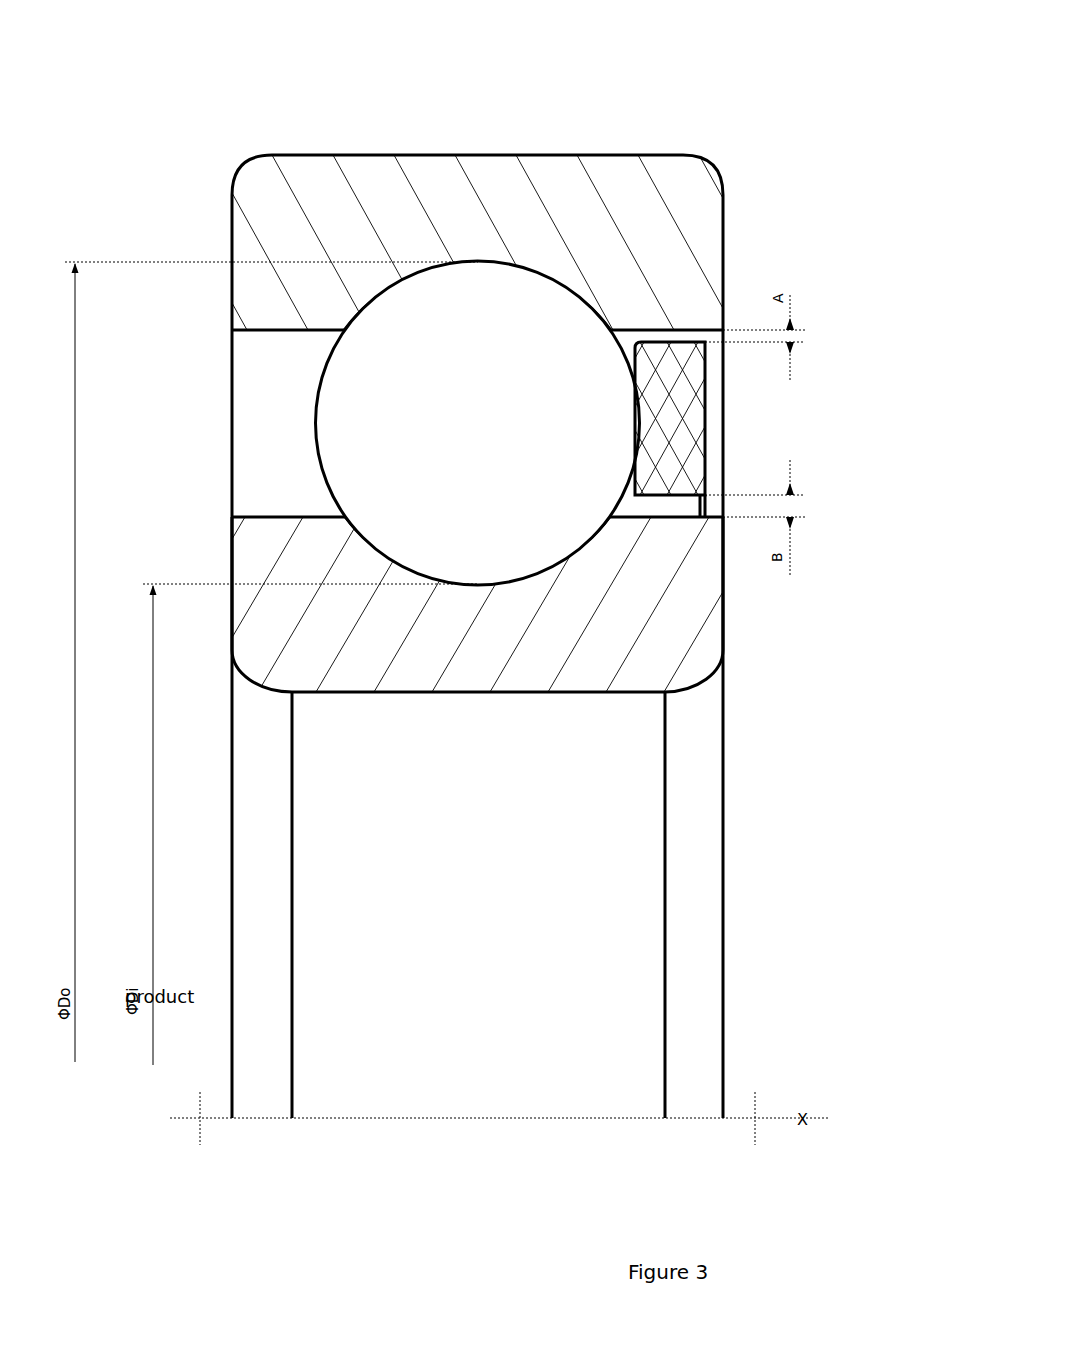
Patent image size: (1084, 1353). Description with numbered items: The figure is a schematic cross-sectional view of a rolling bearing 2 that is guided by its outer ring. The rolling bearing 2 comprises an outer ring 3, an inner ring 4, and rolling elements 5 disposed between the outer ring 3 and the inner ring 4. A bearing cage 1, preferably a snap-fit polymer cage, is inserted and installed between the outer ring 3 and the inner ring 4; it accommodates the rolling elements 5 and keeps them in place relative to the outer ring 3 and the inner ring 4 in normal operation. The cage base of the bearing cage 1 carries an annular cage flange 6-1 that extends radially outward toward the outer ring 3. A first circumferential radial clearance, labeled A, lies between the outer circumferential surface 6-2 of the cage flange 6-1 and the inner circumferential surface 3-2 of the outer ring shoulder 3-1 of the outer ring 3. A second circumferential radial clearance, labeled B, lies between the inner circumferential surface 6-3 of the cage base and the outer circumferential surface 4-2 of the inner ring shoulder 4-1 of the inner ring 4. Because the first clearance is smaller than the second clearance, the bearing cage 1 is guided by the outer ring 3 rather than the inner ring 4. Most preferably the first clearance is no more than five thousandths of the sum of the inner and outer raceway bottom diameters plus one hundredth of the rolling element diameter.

The bearing cage 1 is at (756, 483).
The rolling bearing 2 is at (810, 139).
The outer ring 3 is at (703, 205).
The outer ring shoulder 3-1 is at (682, 283).
The inner circumferential surface of the outer ring shoulder 3-2 is at (598, 312).
The inner ring 4 is at (388, 655).
The inner ring shoulder 4-1 is at (625, 653).
The outer circumferential surface of the inner ring shoulder 4-2 is at (643, 520).
The rolling elements 5 is at (435, 345).
The cage flange 6-1 is at (697, 345).
The outer circumferential surface of the cage flange 6-2 is at (670, 418).
The inner circumferential surface of the cage base 6-3 is at (668, 498).